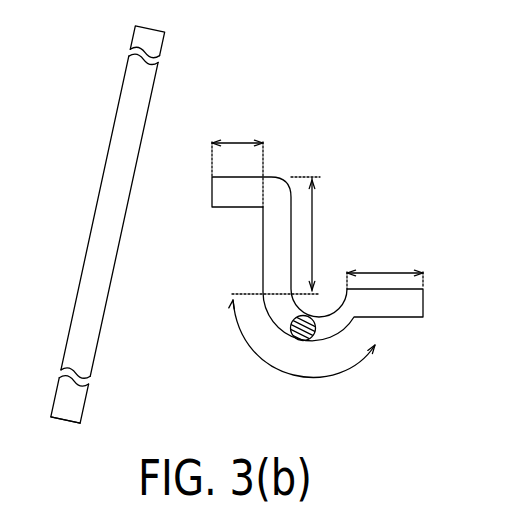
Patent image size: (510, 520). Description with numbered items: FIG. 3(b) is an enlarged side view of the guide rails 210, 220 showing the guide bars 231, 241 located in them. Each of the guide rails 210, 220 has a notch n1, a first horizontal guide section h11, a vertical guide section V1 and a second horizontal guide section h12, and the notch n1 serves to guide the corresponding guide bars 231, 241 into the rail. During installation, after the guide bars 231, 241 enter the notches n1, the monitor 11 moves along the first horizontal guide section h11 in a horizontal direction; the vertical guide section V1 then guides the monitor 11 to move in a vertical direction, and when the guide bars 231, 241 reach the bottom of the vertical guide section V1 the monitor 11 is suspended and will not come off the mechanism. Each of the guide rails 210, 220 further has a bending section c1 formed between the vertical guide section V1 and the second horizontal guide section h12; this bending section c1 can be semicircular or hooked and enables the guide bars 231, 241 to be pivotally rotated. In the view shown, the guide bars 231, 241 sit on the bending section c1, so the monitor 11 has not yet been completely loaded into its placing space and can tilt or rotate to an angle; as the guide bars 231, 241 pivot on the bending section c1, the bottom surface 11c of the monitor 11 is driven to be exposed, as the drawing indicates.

The monitor 11 is at (128, 120).
The bottom surface 11c is at (65, 420).
The guide rail 210 is at (337, 223).
The guide rail 220 is at (463, 133).
The guide bar 231 is at (237, 300).
The guide bar 241 is at (297, 321).
The first horizontal guide section h11 is at (237, 158).
The notch n1 is at (209, 182).
The vertical guide section V1 is at (290, 235).
The second horizontal guide section h12 is at (385, 266).
The bending section c1 is at (302, 351).